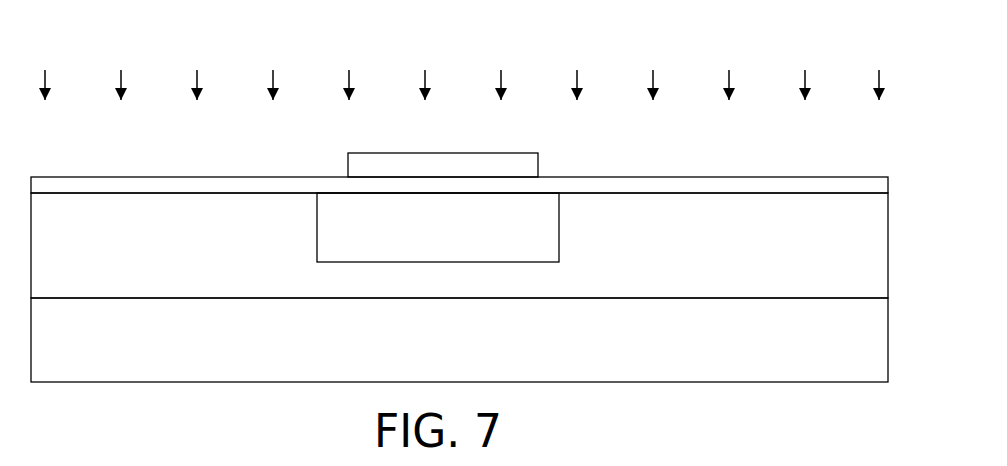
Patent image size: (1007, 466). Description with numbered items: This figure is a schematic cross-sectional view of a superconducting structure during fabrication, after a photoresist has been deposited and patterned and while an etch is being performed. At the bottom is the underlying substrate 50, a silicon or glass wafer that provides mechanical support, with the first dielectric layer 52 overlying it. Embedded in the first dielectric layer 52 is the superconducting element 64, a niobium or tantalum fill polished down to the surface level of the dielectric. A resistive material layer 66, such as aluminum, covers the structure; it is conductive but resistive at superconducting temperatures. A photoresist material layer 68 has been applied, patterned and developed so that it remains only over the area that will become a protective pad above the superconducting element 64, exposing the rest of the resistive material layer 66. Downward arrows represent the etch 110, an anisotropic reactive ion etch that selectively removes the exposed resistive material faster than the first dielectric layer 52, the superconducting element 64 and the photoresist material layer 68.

The underlying substrate 50 is at (888, 315).
The first dielectric layer 52 is at (888, 240).
The superconducting element 64 is at (430, 241).
The resistive material layer 66 is at (888, 181).
The photoresist material layer 68 is at (539, 165).
The etch 110 is at (868, 42).